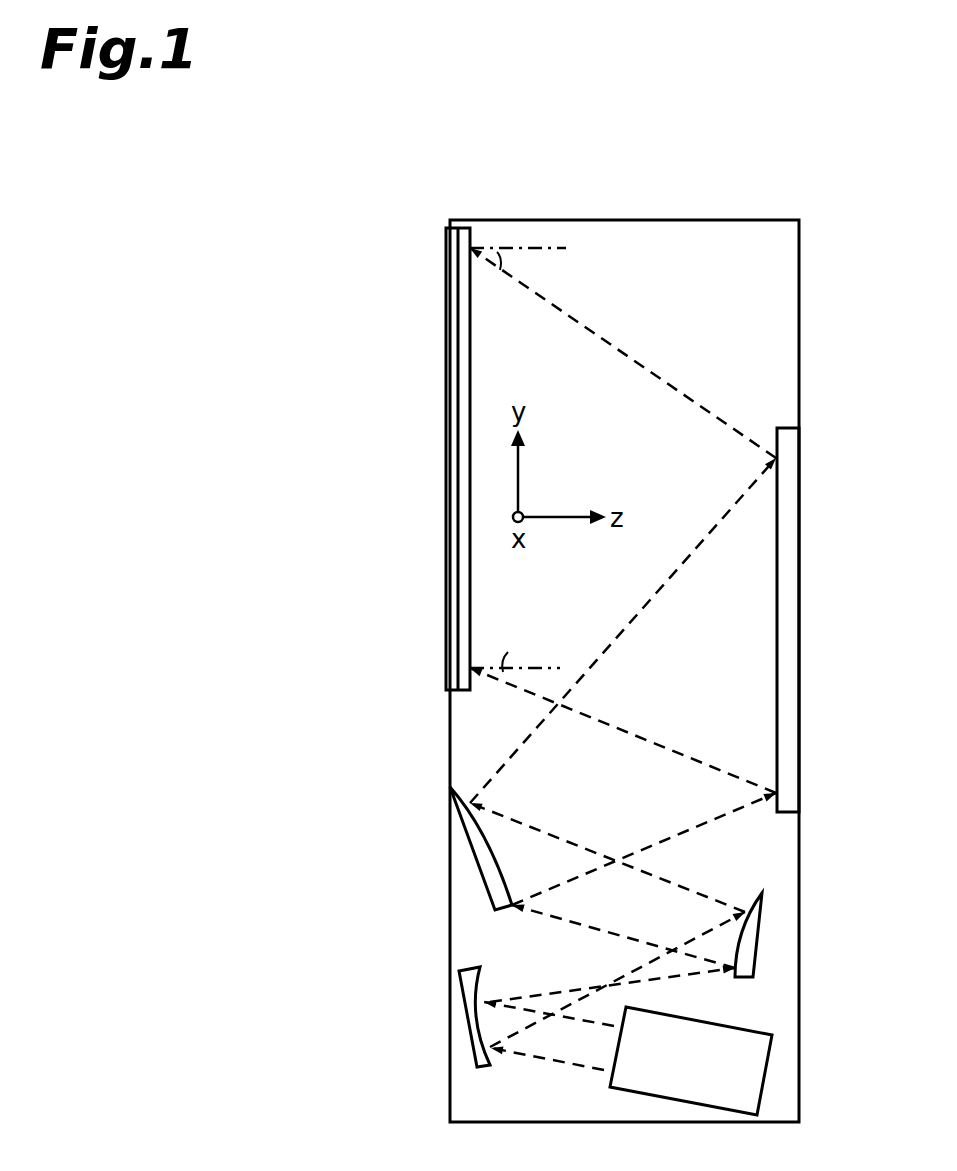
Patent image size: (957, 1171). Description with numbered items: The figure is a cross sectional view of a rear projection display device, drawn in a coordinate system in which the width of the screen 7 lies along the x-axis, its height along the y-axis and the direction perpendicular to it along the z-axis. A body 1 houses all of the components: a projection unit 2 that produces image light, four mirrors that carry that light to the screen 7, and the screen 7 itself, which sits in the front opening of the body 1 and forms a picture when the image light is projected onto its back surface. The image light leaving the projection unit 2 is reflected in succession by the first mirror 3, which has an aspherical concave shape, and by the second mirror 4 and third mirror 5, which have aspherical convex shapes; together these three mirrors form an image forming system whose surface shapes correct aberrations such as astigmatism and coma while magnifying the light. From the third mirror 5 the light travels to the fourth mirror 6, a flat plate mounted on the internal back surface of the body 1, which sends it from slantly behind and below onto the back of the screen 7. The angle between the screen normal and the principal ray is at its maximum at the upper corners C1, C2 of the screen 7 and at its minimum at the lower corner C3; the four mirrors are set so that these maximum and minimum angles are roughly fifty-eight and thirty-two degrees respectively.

The body 1 is at (802, 334).
The projection unit 2 is at (748, 1062).
The first mirror 3 is at (470, 1020).
The second mirror 4 is at (750, 942).
The third mirror 5 is at (486, 855).
The fourth mirror 6 is at (790, 598).
The screen 7 is at (453, 448).
The upper corner C1 is at (450, 247).
The upper corner C2 is at (364, 266).
The lower corner C3 is at (450, 668).